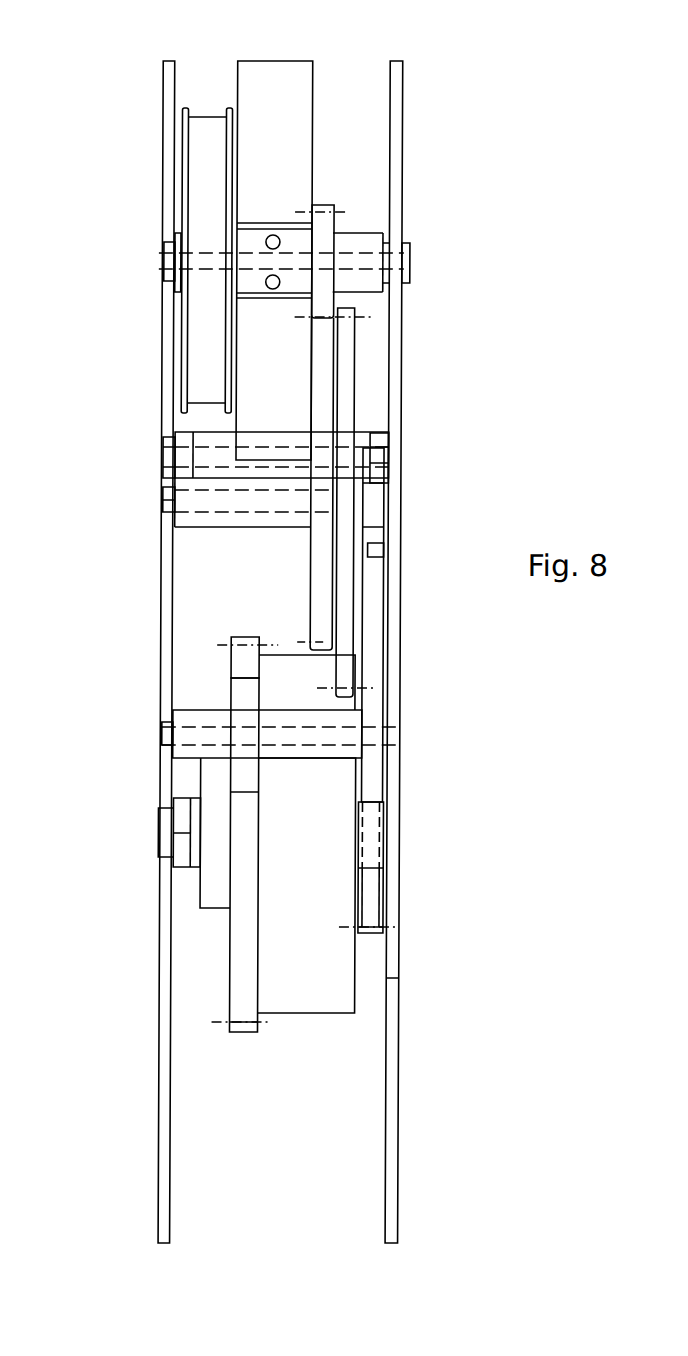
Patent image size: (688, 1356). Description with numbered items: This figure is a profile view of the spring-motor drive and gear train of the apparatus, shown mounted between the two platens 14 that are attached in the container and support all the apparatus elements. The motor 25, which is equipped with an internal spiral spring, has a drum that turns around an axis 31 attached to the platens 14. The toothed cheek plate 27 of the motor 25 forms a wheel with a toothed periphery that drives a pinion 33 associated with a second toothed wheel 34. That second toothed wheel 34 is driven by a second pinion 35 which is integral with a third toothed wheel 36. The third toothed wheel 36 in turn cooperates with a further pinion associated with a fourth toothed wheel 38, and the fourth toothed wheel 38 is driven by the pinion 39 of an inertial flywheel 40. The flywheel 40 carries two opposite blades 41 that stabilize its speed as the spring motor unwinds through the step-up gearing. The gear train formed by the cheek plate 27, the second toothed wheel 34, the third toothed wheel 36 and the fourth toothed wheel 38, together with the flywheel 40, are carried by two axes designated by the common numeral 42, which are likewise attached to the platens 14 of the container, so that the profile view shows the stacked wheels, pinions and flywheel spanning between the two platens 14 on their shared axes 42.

The platens 14 is at (395, 190).
The motor 25 is at (295, 993).
The toothed cheek plate 27 is at (245, 660).
The axis 31 is at (160, 826).
The pinion 33 is at (245, 697).
The second toothed wheel 34 is at (373, 628).
The second pinion 35 is at (372, 528).
The third toothed wheel 36 is at (345, 402).
The fourth toothed wheel 38 is at (318, 583).
The pinion of the inertial flywheel 39 is at (328, 205).
The inertial flywheel 40 is at (207, 168).
The blades 41 is at (263, 104).
The axes 42 is at (165, 262).